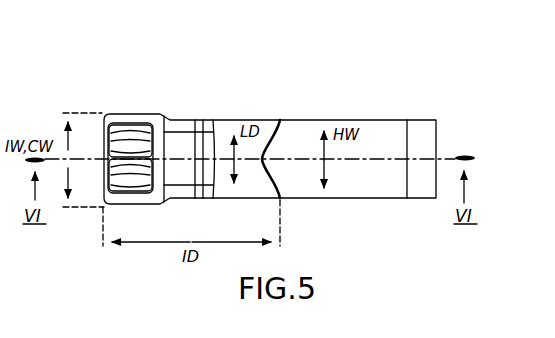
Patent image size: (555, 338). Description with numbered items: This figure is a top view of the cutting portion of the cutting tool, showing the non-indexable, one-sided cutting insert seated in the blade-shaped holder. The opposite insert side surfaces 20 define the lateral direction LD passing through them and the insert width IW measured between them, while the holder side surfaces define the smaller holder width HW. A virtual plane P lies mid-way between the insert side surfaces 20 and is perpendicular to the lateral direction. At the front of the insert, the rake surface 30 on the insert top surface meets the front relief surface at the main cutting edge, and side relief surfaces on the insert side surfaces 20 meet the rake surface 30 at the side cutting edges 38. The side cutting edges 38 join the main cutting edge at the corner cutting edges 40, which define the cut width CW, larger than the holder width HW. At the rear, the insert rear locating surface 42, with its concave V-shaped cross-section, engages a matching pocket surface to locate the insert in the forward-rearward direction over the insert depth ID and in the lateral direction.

The insert side surfaces 20 is at (225, 118).
The rake surface 30 is at (153, 132).
The side cutting edges 38 is at (137, 113).
The corner cutting edges 40 is at (100, 113).
The insert rear locating surface 42 is at (282, 138).
The virtual plane P is at (390, 158).